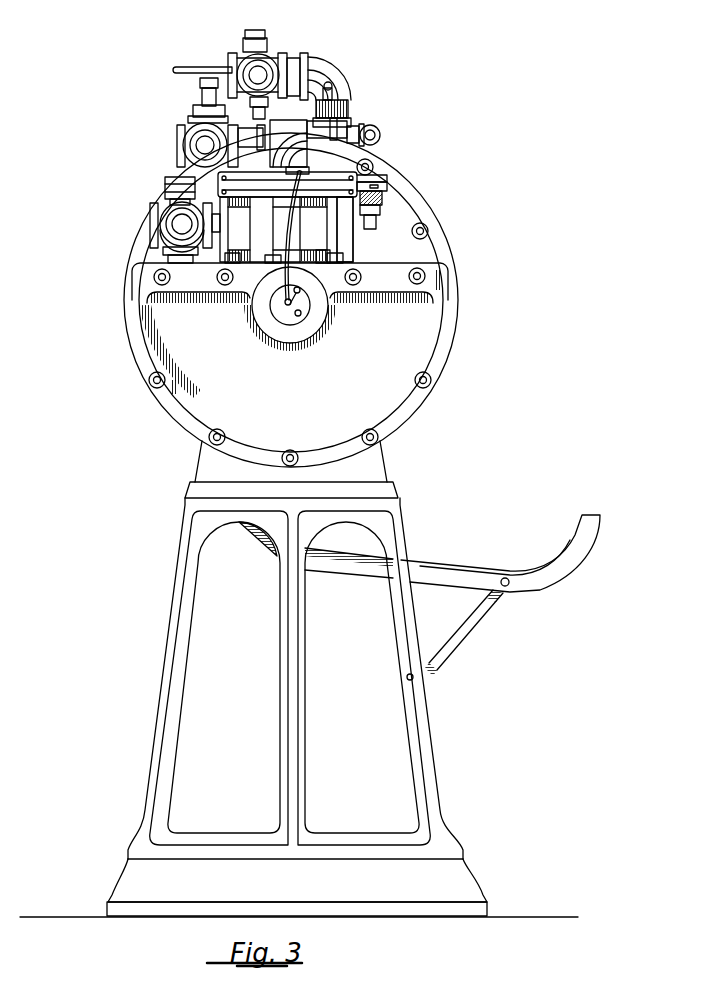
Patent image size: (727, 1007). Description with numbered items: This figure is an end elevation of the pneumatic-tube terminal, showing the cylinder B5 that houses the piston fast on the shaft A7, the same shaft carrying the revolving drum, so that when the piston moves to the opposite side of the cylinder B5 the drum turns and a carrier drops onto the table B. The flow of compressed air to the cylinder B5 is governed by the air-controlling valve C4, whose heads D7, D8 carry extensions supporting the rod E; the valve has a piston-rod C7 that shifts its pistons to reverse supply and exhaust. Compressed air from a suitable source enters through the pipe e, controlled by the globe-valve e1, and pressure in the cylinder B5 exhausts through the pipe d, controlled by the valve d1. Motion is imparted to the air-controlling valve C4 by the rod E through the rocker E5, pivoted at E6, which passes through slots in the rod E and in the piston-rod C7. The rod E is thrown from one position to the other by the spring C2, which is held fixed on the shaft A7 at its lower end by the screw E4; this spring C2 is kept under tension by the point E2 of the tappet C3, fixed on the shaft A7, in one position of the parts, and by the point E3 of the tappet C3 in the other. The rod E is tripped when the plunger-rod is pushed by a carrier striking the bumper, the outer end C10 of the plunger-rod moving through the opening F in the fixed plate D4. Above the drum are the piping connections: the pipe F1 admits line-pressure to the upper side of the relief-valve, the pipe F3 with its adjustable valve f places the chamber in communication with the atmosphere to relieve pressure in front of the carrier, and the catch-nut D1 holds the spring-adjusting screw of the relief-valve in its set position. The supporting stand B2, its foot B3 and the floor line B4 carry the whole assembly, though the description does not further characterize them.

The cylinder B5 is at (289, 420).
The head of the air-controlling valve D8 is at (221, 268).
The point of the tappet E2 is at (284, 295).
The shaft A7 is at (286, 312).
The tappet C3 is at (310, 316).
The screw E4 is at (297, 304).
The point of the tappet E3 is at (300, 326).
The opening F is at (306, 235).
The fixed plate D4 is at (287, 217).
The head of the air-controlling valve D7 is at (358, 266).
The spring C2 is at (275, 266).
The air-controlling valve C4 is at (328, 266).
The rod E is at (391, 190).
The rocker E5 is at (394, 200).
The pivot of the rocker E6 is at (402, 216).
The piston-rod of the air-controlling valve C7 is at (381, 240).
The outer end of the plunger-rod C10 is at (359, 169).
The pipe d is at (165, 233).
The valve d1 is at (180, 217).
The globe-valve e1 is at (206, 136).
The pipe e is at (280, 150).
The pipe F1 is at (381, 135).
The adjustable valve f is at (252, 74).
The pipe F3 is at (320, 72).
The catch-nut D1 is at (353, 114).
The stand B2 is at (294, 724).
The table B is at (455, 572).
The plinth B3 is at (372, 890).
The ground B4 is at (299, 908).